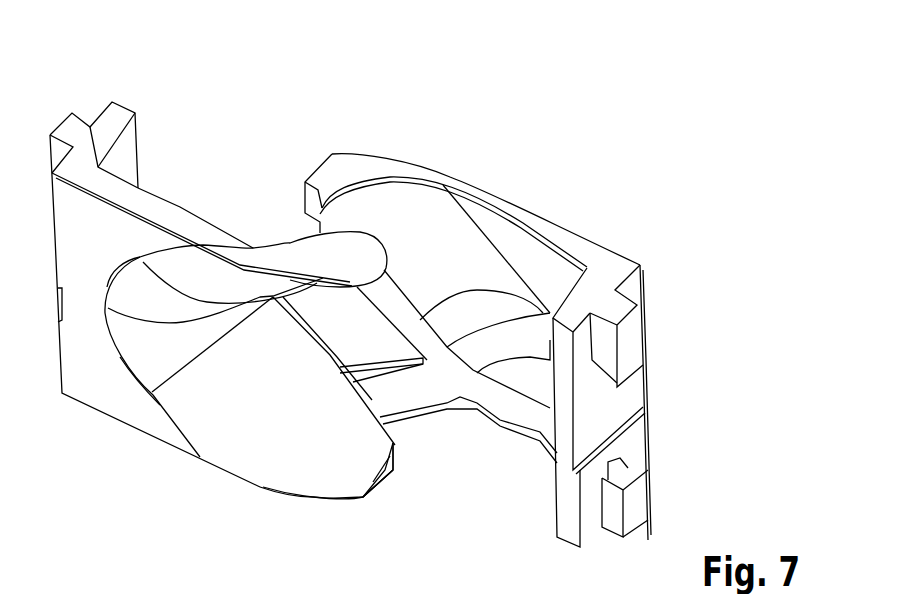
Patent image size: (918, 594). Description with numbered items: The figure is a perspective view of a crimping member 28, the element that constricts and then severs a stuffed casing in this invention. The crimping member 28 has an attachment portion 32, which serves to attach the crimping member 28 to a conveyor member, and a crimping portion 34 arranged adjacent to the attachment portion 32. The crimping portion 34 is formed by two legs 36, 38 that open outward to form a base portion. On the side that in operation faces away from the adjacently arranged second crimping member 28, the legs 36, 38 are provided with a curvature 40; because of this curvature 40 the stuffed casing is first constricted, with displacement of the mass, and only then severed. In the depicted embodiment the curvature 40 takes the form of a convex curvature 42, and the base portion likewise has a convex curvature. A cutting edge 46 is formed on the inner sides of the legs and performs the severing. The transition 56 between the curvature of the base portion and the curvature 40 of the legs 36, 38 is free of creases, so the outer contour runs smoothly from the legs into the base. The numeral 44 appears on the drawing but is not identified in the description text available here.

The crimping member 28 is at (168, 218).
The attachment portion 32 is at (86, 98).
The crimping portion 34 is at (238, 449).
The leg 36 is at (265, 267).
The leg 38 is at (298, 468).
The curvature 40 is at (340, 468).
The convex curvature 42 is at (378, 470).
The shell wall 44 is at (137, 352).
The cutting edge 46 is at (308, 323).
The transition 56 is at (180, 405).